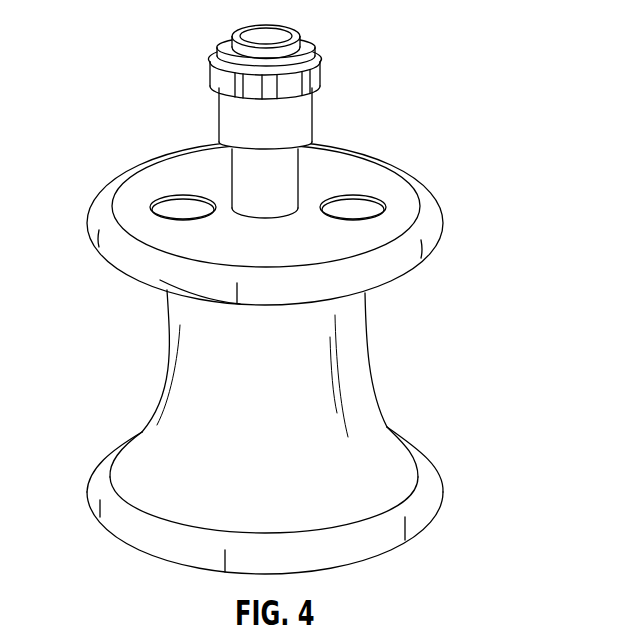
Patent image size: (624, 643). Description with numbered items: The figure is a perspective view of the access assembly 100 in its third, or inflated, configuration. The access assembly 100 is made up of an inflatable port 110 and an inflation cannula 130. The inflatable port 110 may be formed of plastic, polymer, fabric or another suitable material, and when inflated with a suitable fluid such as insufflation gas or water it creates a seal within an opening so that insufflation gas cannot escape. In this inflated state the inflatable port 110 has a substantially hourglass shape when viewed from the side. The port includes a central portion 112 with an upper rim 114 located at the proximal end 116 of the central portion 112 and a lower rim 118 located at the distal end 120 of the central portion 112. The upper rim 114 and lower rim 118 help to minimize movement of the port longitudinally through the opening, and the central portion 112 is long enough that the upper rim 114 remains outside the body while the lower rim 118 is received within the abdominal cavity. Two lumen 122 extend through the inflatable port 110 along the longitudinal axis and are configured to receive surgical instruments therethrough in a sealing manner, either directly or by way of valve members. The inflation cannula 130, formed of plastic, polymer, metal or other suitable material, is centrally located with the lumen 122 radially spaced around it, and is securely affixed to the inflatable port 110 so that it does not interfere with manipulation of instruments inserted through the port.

The access assembly 100 is at (470, 60).
The inflatable port 110 is at (394, 302).
The central portion 112 is at (350, 372).
The upper rim 114 is at (440, 209).
The proximal end 116 is at (180, 283).
The lower rim 118 is at (442, 482).
The distal end 120 is at (393, 462).
The lumen 122 is at (183, 208).
The inflation cannula 130 is at (305, 188).